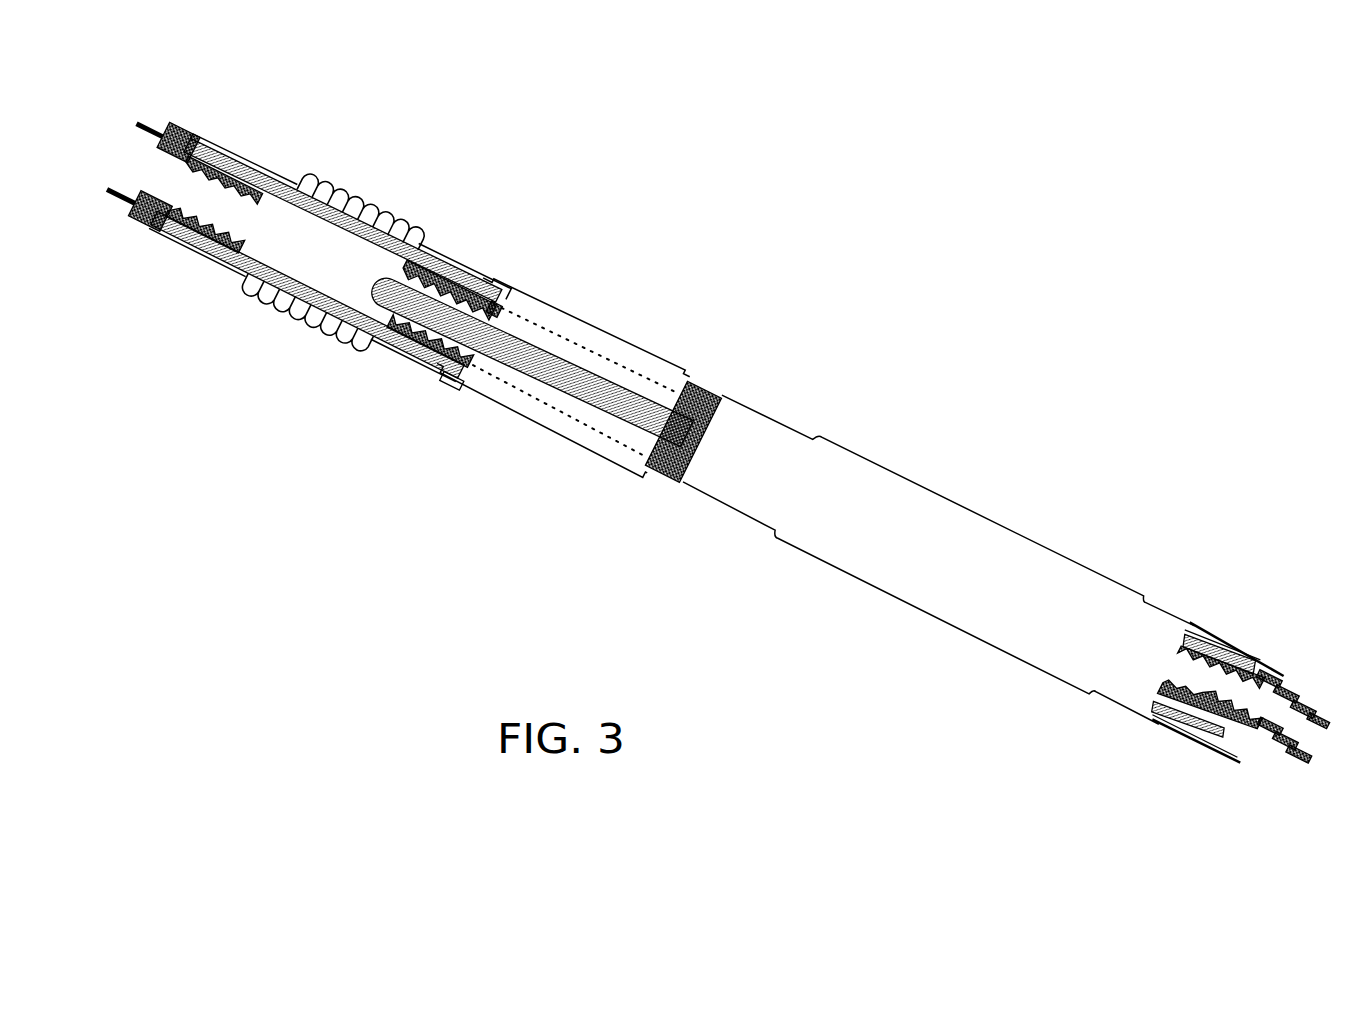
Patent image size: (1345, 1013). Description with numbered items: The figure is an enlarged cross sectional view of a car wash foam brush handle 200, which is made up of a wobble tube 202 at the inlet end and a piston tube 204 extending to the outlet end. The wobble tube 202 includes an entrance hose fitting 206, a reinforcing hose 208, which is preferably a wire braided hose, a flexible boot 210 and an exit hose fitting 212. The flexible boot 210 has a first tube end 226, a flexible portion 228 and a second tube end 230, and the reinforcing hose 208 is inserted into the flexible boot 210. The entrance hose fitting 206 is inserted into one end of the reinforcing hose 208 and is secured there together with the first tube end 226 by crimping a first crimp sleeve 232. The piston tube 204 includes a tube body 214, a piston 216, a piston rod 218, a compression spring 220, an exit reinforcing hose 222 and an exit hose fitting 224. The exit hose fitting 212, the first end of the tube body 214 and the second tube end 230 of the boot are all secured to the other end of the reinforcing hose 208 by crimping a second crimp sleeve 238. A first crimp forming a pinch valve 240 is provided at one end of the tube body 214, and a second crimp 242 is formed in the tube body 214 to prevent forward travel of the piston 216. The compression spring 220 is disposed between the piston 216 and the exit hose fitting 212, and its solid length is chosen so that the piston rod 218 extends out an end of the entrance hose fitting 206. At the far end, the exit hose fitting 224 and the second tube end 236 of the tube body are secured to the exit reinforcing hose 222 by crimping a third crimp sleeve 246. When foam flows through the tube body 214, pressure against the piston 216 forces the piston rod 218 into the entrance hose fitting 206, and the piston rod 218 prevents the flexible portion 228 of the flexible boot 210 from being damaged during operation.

The car wash foam brush handle 200 is at (930, 250).
The wobble tube 202 is at (455, 227).
The piston tube 204 is at (887, 460).
The entrance hose fitting 206 is at (181, 134).
The reinforcing hose 208 is at (258, 180).
The flexible boot 210 is at (395, 208).
The exit hose fitting 212 is at (465, 370).
The tube body 214 is at (1017, 533).
The piston 216 is at (703, 393).
The piston rod 218 is at (617, 408).
The compression spring 220 is at (585, 440).
The exit reinforcing hose 222 is at (1180, 722).
The exit hose fitting 224 is at (1220, 757).
The first tube end 226 is at (213, 257).
The flexible portion 228 is at (297, 320).
The second tube end 230 is at (403, 313).
The first crimp sleeve 232 is at (242, 160).
The second tube end 236 is at (1192, 625).
The second crimp sleeve 238 is at (452, 268).
The pinch valve 240 is at (553, 427).
The second crimp 242 is at (735, 513).
The third crimp sleeve 246 is at (1158, 727).